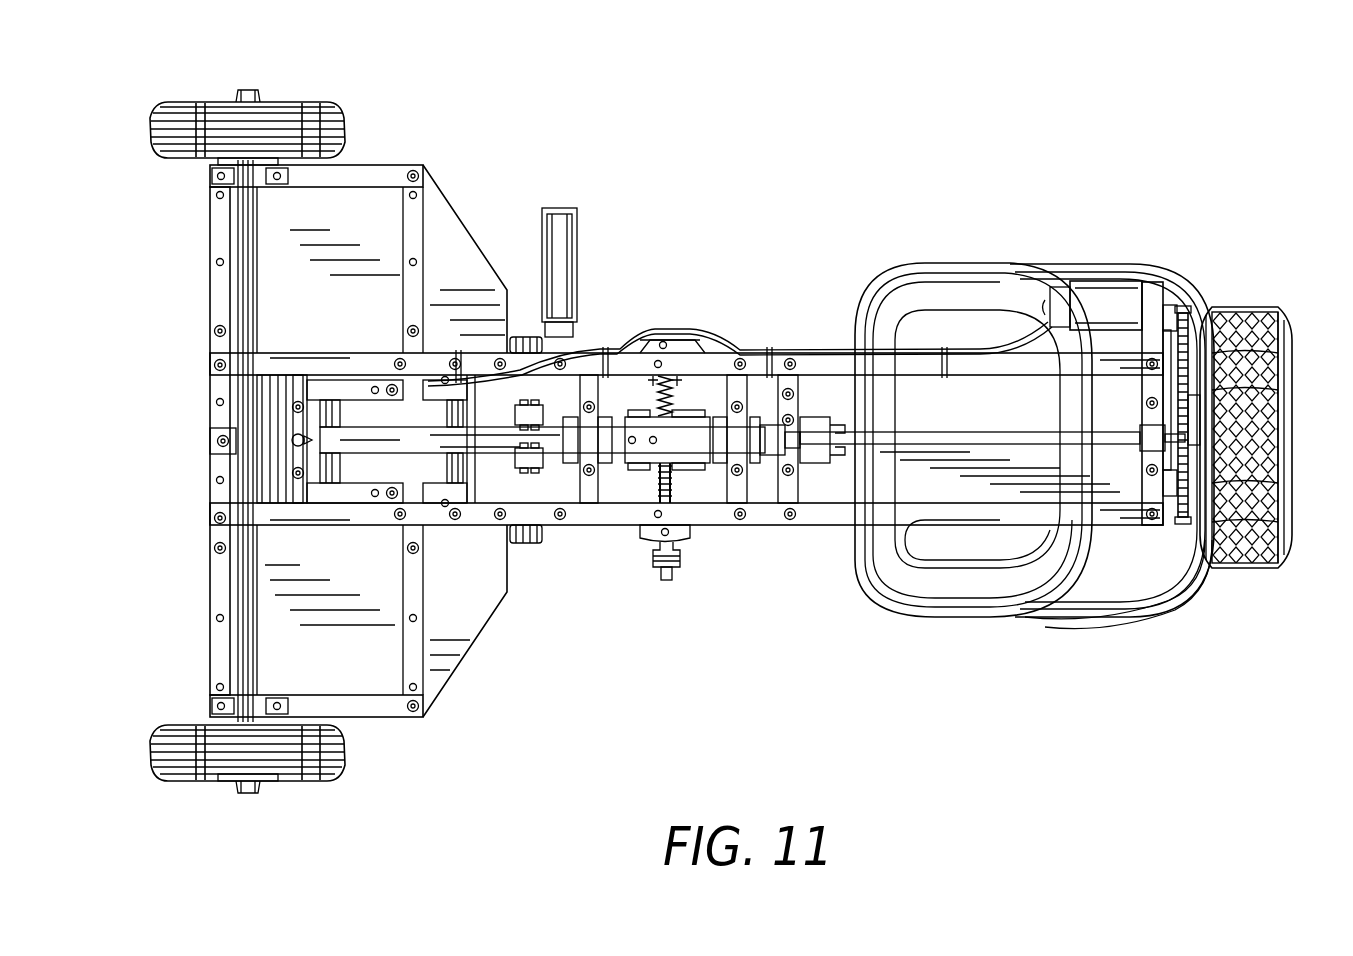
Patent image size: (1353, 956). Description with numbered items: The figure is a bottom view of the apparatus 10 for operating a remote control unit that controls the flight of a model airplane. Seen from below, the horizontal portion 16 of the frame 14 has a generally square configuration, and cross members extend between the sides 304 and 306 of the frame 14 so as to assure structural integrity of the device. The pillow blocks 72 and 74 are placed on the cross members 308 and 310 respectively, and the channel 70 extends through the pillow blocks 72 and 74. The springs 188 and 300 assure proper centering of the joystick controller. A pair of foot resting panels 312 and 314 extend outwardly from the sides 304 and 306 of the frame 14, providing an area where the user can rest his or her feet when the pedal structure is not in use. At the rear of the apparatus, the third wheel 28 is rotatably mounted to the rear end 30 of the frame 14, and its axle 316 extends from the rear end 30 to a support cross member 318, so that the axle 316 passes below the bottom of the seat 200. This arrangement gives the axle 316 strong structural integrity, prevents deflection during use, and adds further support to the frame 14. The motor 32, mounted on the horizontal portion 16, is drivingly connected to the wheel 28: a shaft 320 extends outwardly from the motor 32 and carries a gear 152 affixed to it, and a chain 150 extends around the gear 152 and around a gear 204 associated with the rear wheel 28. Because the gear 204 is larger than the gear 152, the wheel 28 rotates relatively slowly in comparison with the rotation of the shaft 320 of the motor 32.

The apparatus 10 is at (745, 200).
The frame 14 is at (686, 431).
The horizontal portion 16 is at (712, 352).
The third wheel 28 is at (1283, 562).
The rear end 30 is at (1194, 395).
The motor 32 is at (1115, 280).
The channel 70 is at (505, 530).
The pillow block 72 is at (740, 375).
The pillow block 74 is at (600, 420).
The chain 150 is at (1180, 525).
The gear 152 is at (1183, 320).
The spring 188 is at (663, 375).
The seat 200 is at (943, 600).
The gear 204 is at (1185, 520).
The spring 300 is at (660, 475).
The side 304 is at (665, 345).
The side 306 is at (835, 512).
The cross member 308 is at (733, 490).
The cross member 310 is at (575, 352).
The foot resting panel 312 is at (443, 200).
The foot resting panel 314 is at (457, 630).
The axle 316 is at (960, 430).
The support cross member 318 is at (795, 405).
The shaft 320 is at (1175, 305).